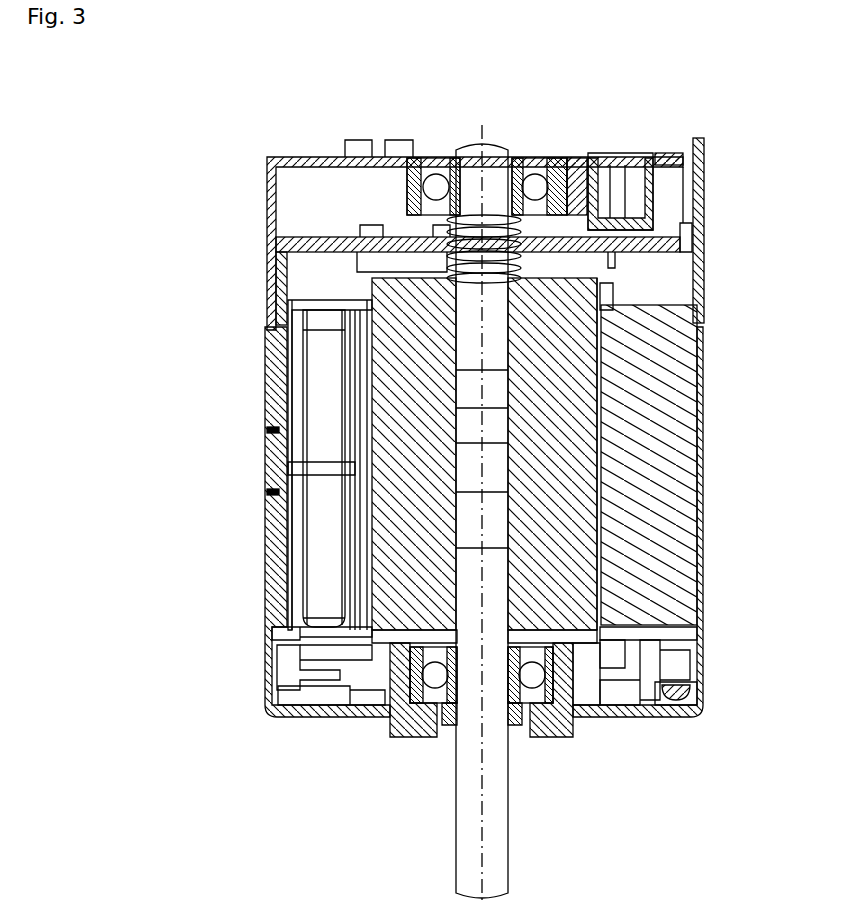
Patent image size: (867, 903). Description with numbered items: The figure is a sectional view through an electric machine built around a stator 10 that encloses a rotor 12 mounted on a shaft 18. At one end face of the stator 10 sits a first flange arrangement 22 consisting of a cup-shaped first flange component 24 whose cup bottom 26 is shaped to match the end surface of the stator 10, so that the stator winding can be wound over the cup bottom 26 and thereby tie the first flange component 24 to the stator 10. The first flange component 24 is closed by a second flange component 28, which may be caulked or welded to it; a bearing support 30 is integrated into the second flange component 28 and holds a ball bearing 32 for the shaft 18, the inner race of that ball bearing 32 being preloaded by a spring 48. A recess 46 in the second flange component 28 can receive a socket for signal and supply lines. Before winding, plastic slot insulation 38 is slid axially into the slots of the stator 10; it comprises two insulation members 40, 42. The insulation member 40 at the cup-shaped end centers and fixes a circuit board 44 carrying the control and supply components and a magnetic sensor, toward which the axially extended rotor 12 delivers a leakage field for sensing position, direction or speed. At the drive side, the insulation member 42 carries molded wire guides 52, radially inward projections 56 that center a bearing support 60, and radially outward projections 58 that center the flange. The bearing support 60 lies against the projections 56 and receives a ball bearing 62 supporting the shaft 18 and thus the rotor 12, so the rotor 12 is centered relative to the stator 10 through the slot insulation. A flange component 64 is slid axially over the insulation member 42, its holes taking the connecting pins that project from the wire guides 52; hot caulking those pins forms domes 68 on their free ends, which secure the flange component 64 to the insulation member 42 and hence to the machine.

The stator 10 is at (637, 432).
The rotor 12 is at (572, 385).
The shaft 18 is at (466, 752).
The first flange arrangement 22 is at (707, 238).
The first flange component 24 is at (272, 222).
The cup bottom 26 is at (700, 325).
The second flange component 28 is at (295, 157).
The bearing support 30 is at (402, 185).
The ball bearing 32 is at (432, 170).
The slot insulation 38 is at (270, 430).
The insulation member 40 is at (278, 385).
The insulation member 42 is at (290, 540).
The circuit board 44 is at (662, 232).
The recess 46 is at (637, 185).
The spring 48 is at (490, 238).
The wire guides 52 is at (295, 670).
The projections 56 is at (598, 650).
The projections 58 is at (285, 627).
The bearing support 60 is at (560, 728).
The ball bearing 62 is at (547, 735).
The flange component 64 is at (265, 695).
The domes 68 is at (700, 692).